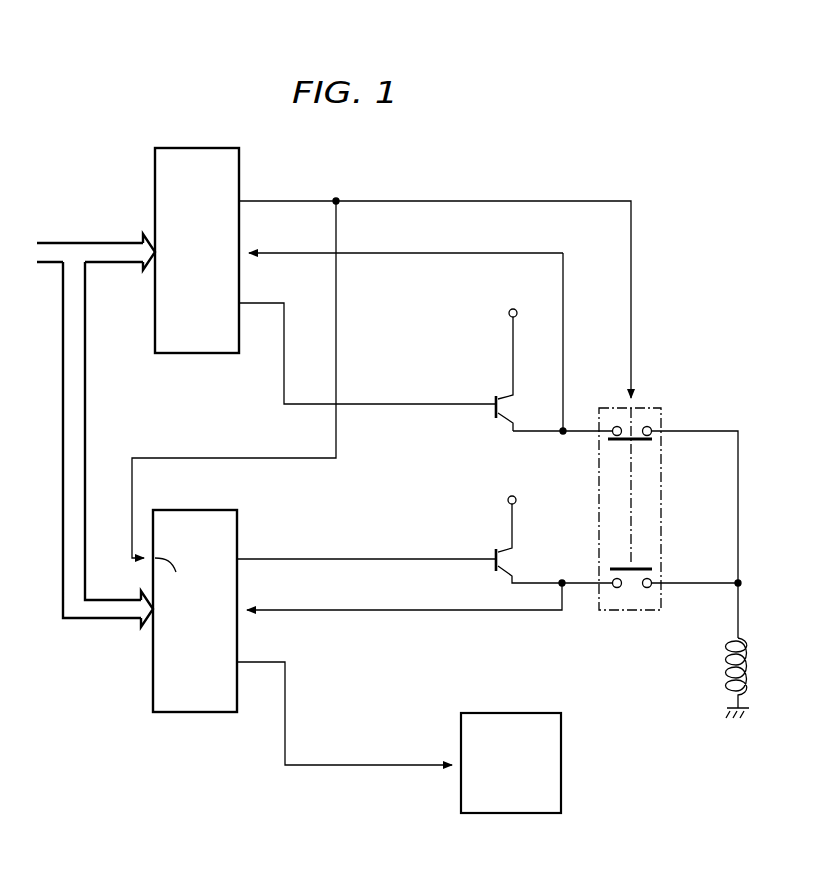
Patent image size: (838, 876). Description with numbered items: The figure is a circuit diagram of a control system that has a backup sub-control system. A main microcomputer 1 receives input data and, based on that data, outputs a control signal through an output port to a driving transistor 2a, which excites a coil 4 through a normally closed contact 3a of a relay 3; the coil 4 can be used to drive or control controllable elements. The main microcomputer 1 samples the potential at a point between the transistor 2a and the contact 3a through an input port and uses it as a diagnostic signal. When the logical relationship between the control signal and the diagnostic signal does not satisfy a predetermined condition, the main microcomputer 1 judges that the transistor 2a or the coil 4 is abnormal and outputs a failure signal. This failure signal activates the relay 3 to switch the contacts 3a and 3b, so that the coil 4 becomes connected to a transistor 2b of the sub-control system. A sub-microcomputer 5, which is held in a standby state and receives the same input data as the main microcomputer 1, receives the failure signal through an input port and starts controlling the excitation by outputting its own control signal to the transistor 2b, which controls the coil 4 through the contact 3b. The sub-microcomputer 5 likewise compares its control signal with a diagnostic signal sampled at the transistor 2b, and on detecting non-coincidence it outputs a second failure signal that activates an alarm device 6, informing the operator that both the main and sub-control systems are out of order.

The main microcomputer 1 is at (213, 148).
The driving transistor 2a is at (507, 406).
The transistor 2b is at (507, 559).
The relay 3 is at (645, 489).
The normally closed contact 3a is at (636, 441).
The contact 3b is at (640, 568).
The coil 4 is at (727, 666).
The sub-microcomputer 5 is at (203, 712).
The alarm device 6 is at (527, 713).